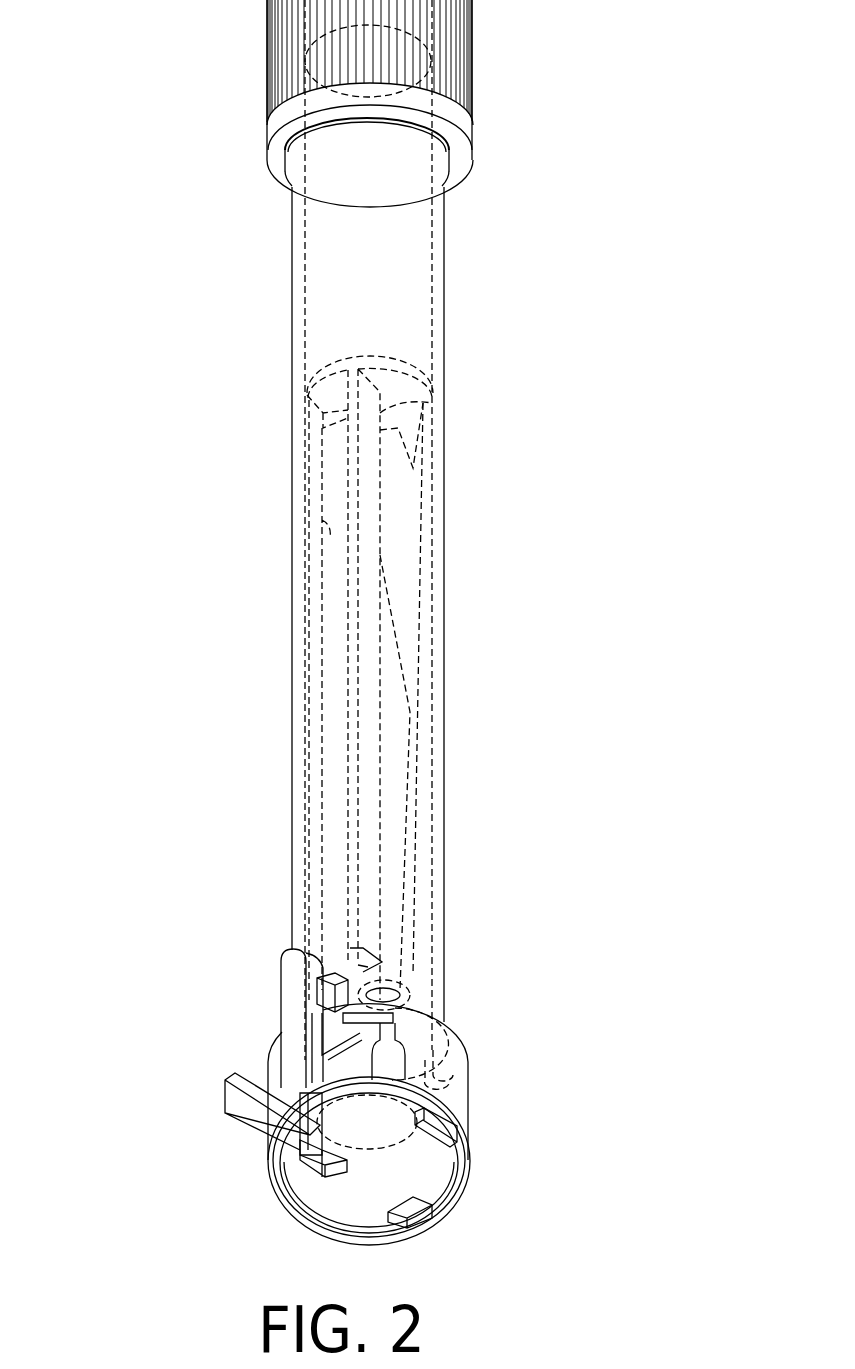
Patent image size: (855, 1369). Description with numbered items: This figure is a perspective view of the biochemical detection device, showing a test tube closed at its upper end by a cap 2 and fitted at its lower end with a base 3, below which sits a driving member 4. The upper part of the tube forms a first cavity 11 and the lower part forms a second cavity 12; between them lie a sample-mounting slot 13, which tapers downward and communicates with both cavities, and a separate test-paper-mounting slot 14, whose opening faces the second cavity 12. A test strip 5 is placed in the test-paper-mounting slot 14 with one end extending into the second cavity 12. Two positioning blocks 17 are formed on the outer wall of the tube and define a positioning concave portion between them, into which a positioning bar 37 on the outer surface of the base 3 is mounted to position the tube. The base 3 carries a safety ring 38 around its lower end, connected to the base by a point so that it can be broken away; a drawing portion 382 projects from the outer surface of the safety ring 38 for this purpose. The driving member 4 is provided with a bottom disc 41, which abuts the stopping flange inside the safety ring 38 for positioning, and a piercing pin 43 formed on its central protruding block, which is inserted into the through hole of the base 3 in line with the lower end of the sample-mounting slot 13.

The cap 2 is at (472, 48).
The first cavity 11 is at (430, 262).
The test strip 5 is at (335, 650).
The sample-mounting slot 13 is at (413, 559).
The test-paper-mounting slot 14 is at (325, 538).
The positioning blocks 17 is at (337, 985).
The piercing pin 43 is at (397, 1050).
The base 3 is at (277, 1044).
The second cavity 12 is at (457, 1083).
The positioning bar 37 is at (288, 964).
The driving member 4 is at (297, 1221).
The bottom disc 41 is at (375, 1218).
The safety ring 38 is at (305, 1146).
The drawing portion 382 is at (228, 1087).